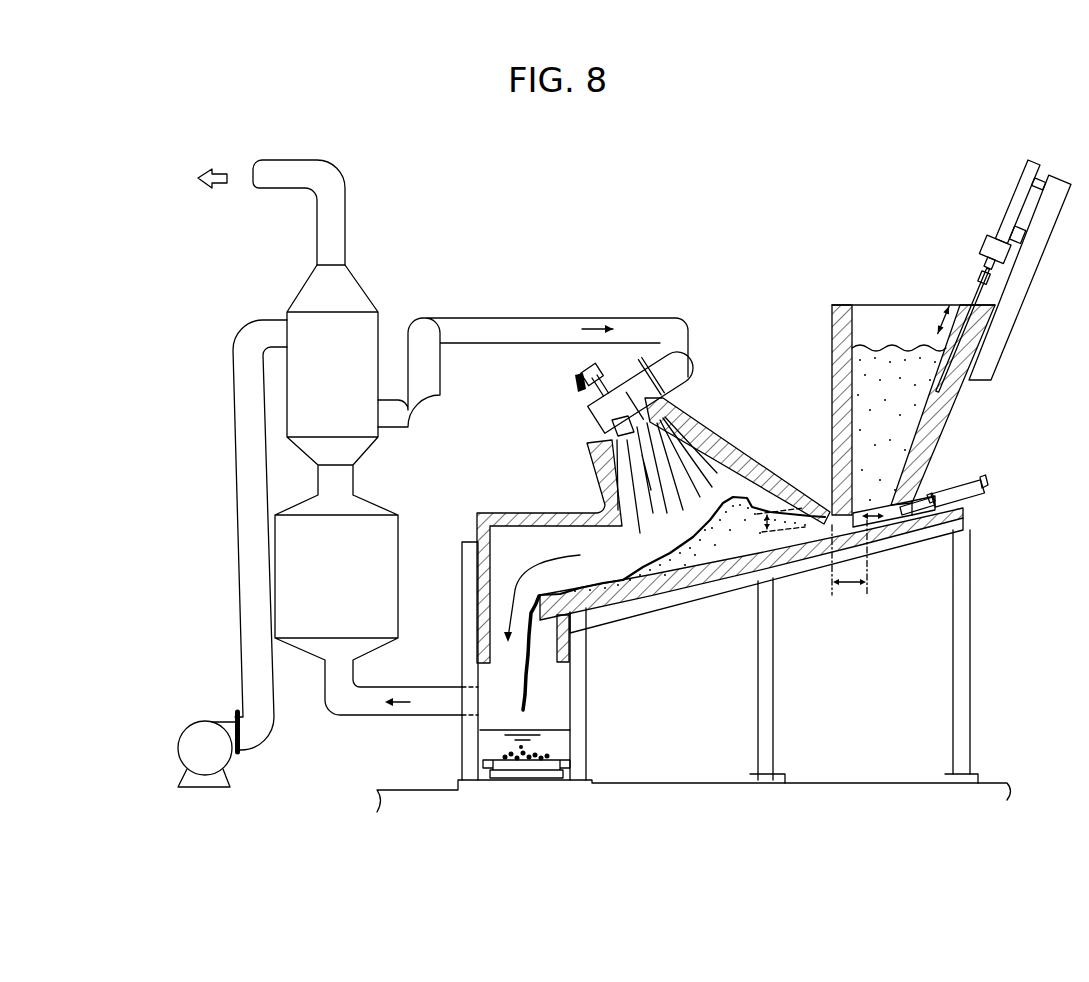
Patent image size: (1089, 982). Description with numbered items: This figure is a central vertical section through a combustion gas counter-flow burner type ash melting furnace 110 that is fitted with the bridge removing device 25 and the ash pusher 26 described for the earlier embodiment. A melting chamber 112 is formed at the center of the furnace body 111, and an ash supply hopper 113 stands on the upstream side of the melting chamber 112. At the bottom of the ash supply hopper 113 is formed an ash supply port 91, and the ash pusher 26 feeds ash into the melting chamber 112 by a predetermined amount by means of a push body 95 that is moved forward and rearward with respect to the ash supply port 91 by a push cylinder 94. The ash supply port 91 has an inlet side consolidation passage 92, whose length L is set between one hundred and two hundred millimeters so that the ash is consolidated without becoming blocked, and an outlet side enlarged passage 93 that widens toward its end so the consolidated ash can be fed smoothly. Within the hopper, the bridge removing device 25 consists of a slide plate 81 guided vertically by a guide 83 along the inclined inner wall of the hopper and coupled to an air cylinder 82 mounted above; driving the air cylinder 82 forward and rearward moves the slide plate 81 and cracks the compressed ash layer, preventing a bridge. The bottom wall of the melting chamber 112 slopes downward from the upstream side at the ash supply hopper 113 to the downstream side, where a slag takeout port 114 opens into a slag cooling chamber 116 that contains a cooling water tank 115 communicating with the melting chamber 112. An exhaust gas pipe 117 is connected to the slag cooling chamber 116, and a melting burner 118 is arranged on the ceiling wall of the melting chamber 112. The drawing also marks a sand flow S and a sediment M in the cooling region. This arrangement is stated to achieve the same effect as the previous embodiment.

The ash melting furnace 110 is at (740, 336).
The furnace body 111 is at (754, 447).
The melting chamber 112 is at (740, 452).
The ash supply hopper 113 is at (898, 327).
The slag takeout port 114 is at (518, 618).
The cooling water tank 115 is at (578, 742).
The slag cooling chamber 116 is at (547, 692).
The exhaust gas pipe 117 is at (410, 697).
The melting burner 118 is at (587, 430).
The slide plate 81 is at (973, 363).
The air cylinder 82 is at (1013, 205).
The guide 83 is at (960, 307).
The bridge removing device 25 is at (980, 262).
The ash pusher 26 is at (964, 467).
The push cylinder 94 is at (972, 480).
The ash supply port 91 is at (833, 513).
The consolidation passage 92 is at (803, 533).
The enlarged passage 93 is at (753, 593).
The push body 95 is at (895, 520).
The length of consolidation passage L is at (849, 565).
The sand flow S is at (620, 580).
The sediment M is at (525, 760).